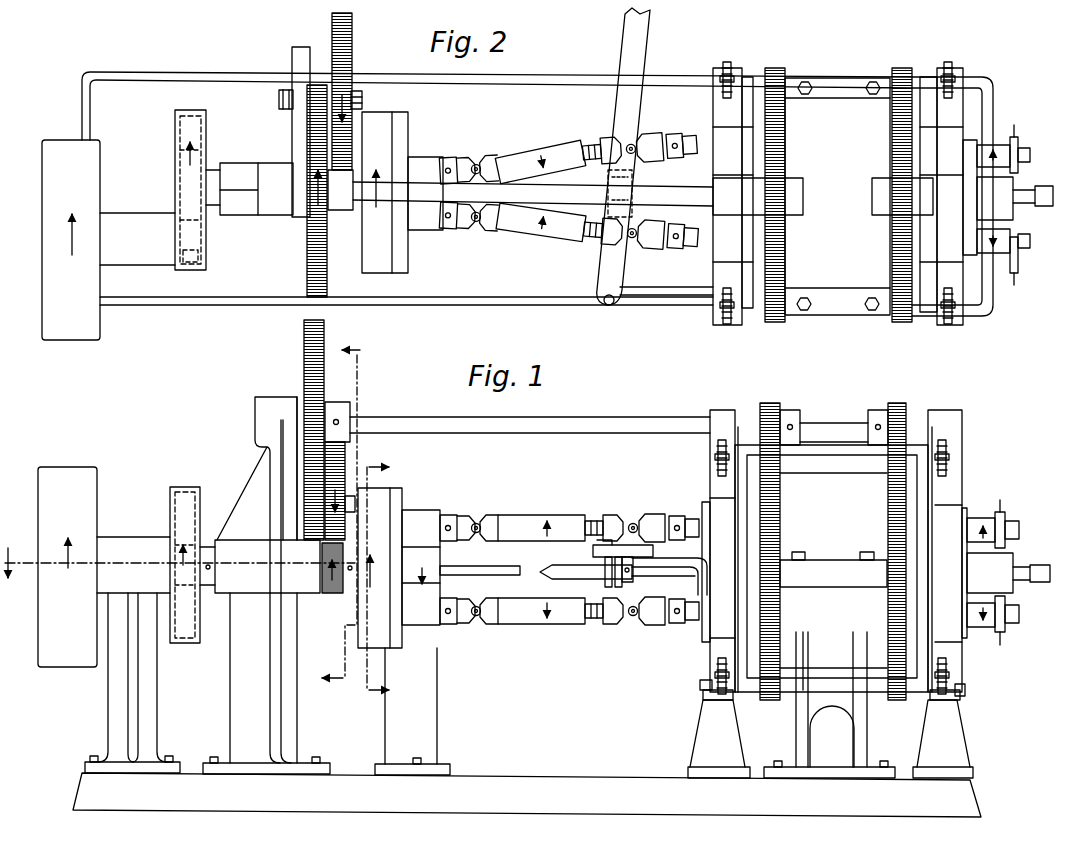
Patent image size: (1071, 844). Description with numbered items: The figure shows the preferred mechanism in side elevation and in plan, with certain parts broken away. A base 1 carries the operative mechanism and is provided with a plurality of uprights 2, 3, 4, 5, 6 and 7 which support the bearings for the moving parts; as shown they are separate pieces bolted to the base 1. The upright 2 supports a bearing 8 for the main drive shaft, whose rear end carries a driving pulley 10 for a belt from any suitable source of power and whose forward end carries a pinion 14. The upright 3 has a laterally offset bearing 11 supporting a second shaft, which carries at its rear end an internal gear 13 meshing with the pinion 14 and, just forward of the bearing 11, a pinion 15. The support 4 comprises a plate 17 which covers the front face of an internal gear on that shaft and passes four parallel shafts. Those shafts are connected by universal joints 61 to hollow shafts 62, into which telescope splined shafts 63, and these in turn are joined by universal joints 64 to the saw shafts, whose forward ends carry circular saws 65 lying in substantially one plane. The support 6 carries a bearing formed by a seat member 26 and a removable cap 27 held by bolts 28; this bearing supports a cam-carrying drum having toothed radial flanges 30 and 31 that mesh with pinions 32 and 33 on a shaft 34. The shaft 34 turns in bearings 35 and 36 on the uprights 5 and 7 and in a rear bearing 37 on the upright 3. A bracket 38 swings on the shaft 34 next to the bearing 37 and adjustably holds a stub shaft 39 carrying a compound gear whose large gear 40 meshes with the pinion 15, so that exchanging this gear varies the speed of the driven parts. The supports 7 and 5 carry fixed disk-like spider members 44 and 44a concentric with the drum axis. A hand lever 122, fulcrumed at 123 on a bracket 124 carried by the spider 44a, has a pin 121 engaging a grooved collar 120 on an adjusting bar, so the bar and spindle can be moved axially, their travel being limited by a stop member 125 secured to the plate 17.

In FIG. 1, the base 1 is at (548, 790).
In FIG. 1, the upright 2 is at (150, 707).
In FIG. 1, the upright 3 is at (297, 727).
In FIG. 1, the upright 4 is at (430, 712).
In FIG. 1, the upright 5 is at (700, 745).
In FIG. 1, the upright 6 is at (857, 745).
In FIG. 1, the upright 7 is at (960, 732).
In FIG. 2, the bearing 8 is at (141, 268).
In FIG. 1, the bearing 8 is at (130, 537).
In FIG. 2, the driving pulley 10 is at (78, 336).
In FIG. 1, the driving pulley 10 is at (68, 476).
In FIG. 1, the bearing 11 is at (250, 585).
In FIG. 2, the internal gear 13 is at (207, 130).
In FIG. 1, the internal gear 13 is at (185, 488).
In FIG. 2, the pinion 14 is at (186, 272).
In FIG. 1, the pinion 15 is at (331, 597).
In FIG. 1, the plate 17 is at (396, 490).
In FIG. 1, the seat member 26 is at (803, 640).
In FIG. 2, the removable cap 27 is at (868, 272).
In FIG. 1, the removable cap 27 is at (816, 480).
In FIG. 2, the bolts 28 is at (812, 86).
In FIG. 1, the bolts 28 is at (868, 552).
In FIG. 2, the radial flange 30 is at (778, 70).
In FIG. 2, the radial flange 31 is at (903, 70).
In FIG. 1, the pinion 32 is at (774, 407).
In FIG. 1, the pinion 33 is at (895, 406).
In FIG. 2, the shaft 34 is at (420, 183).
In FIG. 1, the shaft 34 is at (613, 420).
In FIG. 2, the bearing 35 is at (732, 210).
In FIG. 1, the bearing 35 is at (722, 415).
In FIG. 2, the bearing 36 is at (950, 210).
In FIG. 1, the bearing 36 is at (938, 414).
In FIG. 2, the bearing 37 is at (245, 214).
In FIG. 1, the bearing 37 is at (262, 400).
In FIG. 2, the bracket 38 is at (295, 140).
In FIG. 1, the bracket 38 is at (295, 445).
In FIG. 2, the stub shaft 39 is at (362, 96).
In FIG. 2, the large gear 40 is at (353, 50).
In FIG. 1, the large gear 40 is at (345, 462).
In FIG. 1, the spider member 44 is at (966, 690).
In FIG. 1, the spider member 44a is at (700, 684).
In FIG. 1, the universal joints 61 is at (470, 512).
In FIG. 2, the hollow shafts 62 is at (568, 232).
In FIG. 1, the hollow shafts 62 is at (542, 514).
In FIG. 1, the shafts 63 is at (590, 520).
In FIG. 1, the universal joints 64 is at (647, 514).
In FIG. 2, the circular saws 65 is at (1020, 141).
In FIG. 1, the circular saws 65 is at (1012, 632).
In FIG. 2, the collar 120 is at (630, 178).
In FIG. 2, the pin 121 is at (630, 202).
In FIG. 1, the pin 121 is at (618, 577).
In FIG. 2, the hand lever 122 is at (603, 270).
In FIG. 1, the hand lever 122 is at (632, 545).
In FIG. 2, the fulcrum 123 is at (609, 308).
In FIG. 2, the bracket 124 is at (682, 306).
In FIG. 1, the bracket 124 is at (668, 556).
In FIG. 1, the stop member 125 is at (482, 561).